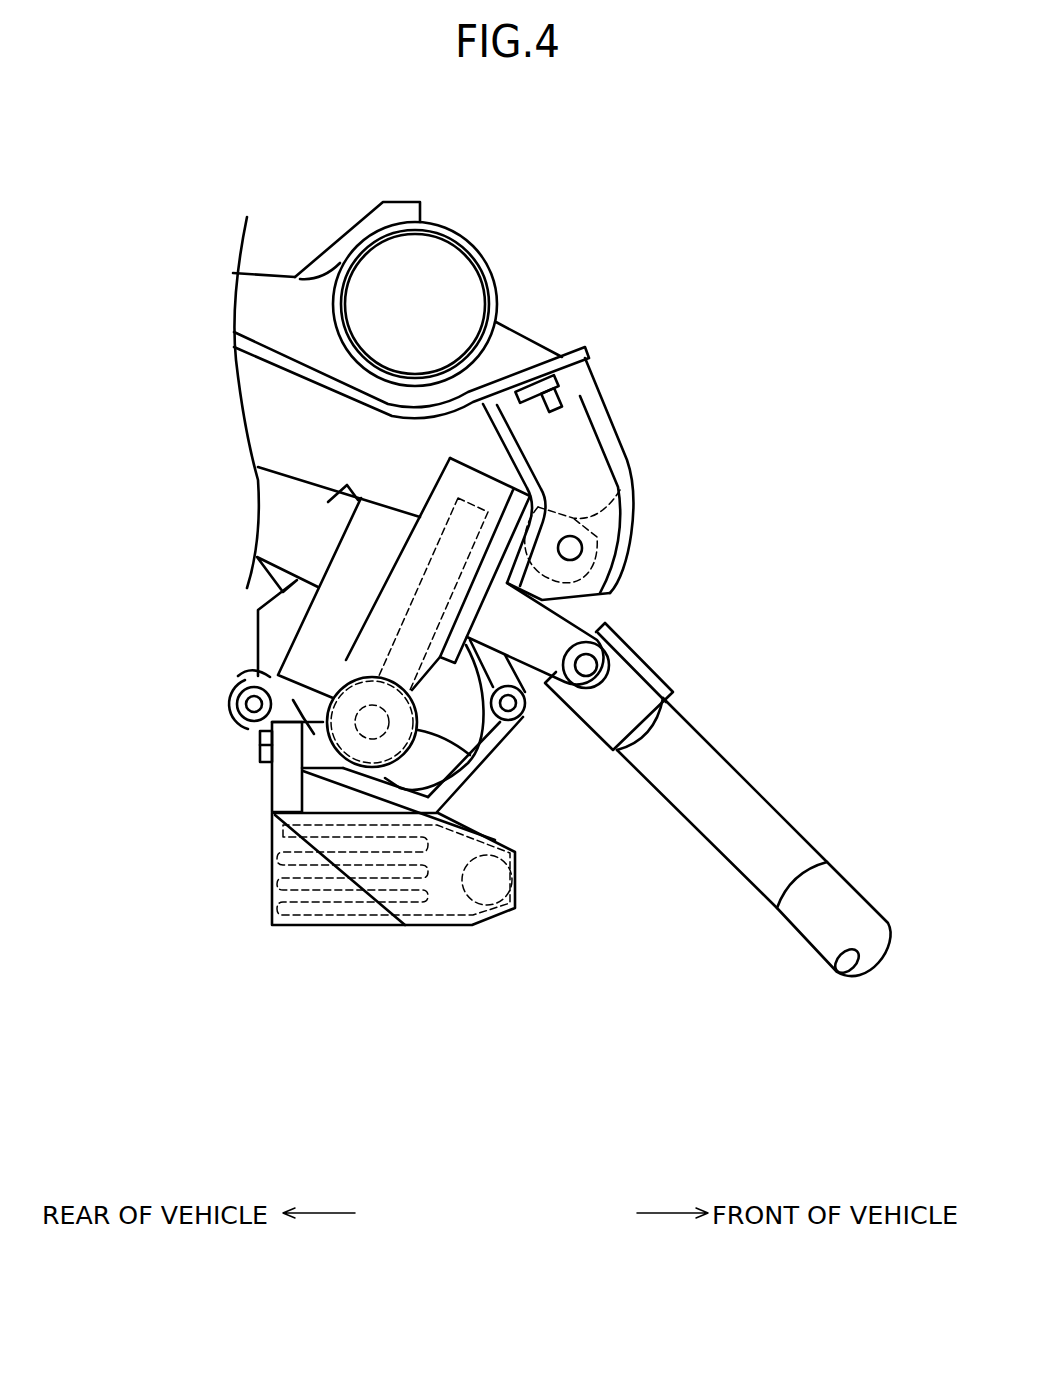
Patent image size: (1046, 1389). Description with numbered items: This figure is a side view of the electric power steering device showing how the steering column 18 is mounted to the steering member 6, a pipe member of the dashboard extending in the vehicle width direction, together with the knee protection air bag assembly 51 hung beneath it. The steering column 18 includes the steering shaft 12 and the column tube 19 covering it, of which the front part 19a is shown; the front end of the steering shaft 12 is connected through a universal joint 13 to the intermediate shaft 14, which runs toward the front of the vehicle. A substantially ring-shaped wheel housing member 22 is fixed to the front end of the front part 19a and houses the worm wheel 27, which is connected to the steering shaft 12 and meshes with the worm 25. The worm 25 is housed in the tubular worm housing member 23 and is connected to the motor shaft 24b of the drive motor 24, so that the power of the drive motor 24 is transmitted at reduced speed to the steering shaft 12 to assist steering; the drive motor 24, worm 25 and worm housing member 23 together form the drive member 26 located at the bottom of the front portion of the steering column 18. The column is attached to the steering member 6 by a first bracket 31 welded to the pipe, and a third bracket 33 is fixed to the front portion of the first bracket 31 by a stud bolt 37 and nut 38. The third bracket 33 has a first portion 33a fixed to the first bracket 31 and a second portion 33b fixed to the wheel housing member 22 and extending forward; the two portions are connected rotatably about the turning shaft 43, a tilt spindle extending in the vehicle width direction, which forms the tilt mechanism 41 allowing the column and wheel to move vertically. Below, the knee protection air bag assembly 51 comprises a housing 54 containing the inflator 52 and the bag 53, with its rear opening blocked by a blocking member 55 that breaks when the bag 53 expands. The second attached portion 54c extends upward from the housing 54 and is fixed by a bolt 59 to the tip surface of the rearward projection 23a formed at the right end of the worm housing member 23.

The steering member 6 is at (443, 237).
The steering shaft 12 is at (573, 627).
The universal joint 13 is at (630, 643).
The intermediate shaft 14 is at (727, 767).
The steering column 18 is at (297, 451).
The column tube 19 is at (262, 402).
The front part 19a is at (275, 472).
The wheel housing member 22 is at (348, 559).
The worm housing member 23 is at (463, 760).
The projection 23a is at (250, 682).
The drive motor 24 is at (449, 800).
The motor shaft 24b is at (300, 785).
The worm 25 is at (355, 676).
The drive member 26 is at (523, 748).
The worm wheel 27 is at (425, 578).
The first bracket 31 is at (513, 348).
The third bracket 33 is at (641, 479).
The first portion 33a is at (610, 422).
The second portion 33b is at (620, 490).
The stud bolt 37 is at (592, 393).
The nut 38 is at (594, 377).
The tilt mechanism 41 is at (637, 382).
The turning shaft 43 is at (571, 548).
The knee protection air bag assembly 51 is at (370, 902).
The inflator 52 is at (515, 876).
The bag 53 is at (343, 914).
The housing 54 is at (427, 926).
The second attached portion 54c is at (282, 797).
The blocking member 55 is at (270, 906).
The bolt 59 is at (258, 734).